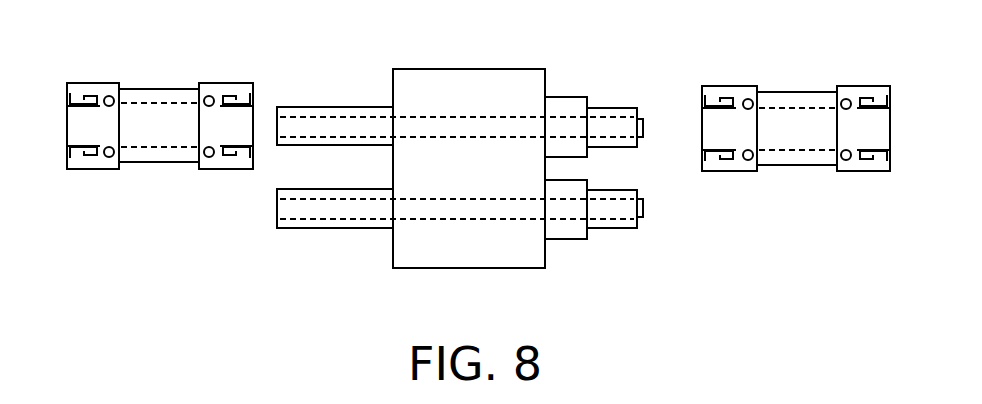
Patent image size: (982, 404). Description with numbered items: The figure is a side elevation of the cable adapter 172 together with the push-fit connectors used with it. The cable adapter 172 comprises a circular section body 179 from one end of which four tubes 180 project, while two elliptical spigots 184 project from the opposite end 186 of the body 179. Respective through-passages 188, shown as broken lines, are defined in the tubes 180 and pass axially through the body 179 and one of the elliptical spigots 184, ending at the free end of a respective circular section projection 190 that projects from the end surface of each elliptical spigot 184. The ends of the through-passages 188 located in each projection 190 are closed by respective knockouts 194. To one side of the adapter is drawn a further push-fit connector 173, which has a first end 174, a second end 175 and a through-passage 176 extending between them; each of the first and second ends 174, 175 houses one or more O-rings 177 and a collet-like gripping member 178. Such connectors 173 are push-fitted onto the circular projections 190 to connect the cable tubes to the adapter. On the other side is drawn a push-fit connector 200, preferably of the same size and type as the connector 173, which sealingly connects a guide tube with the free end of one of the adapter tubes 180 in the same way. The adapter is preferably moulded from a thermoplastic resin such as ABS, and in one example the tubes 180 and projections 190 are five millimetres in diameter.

The cable adapter 172 is at (485, 175).
The further push-fit connector 173 is at (796, 126).
The first end 174 is at (730, 172).
The second end 175 is at (862, 172).
The through-passage 176 is at (886, 86).
The O-ring 177 is at (753, 88).
The collet-like gripping member 178 is at (708, 86).
The circular section body 179 is at (470, 69).
The tube 180 is at (350, 106).
The elliptical spigot 184 is at (580, 97).
The opposite end 186 is at (393, 69).
The through-passage 188 is at (301, 114).
The circular section projection 190 is at (632, 108).
The knockout 194 is at (643, 132).
The push-fit connector 200 is at (89, 186).